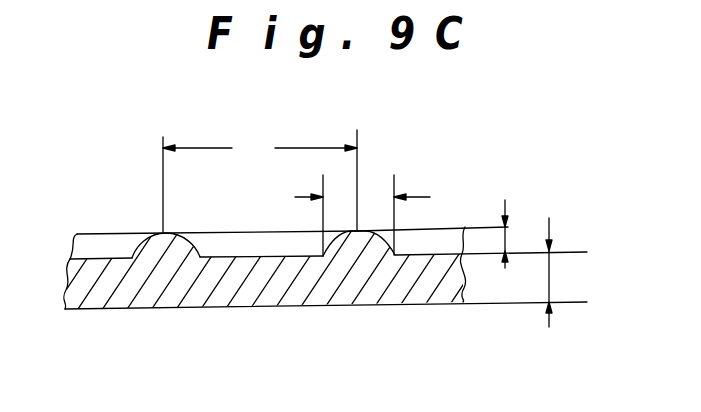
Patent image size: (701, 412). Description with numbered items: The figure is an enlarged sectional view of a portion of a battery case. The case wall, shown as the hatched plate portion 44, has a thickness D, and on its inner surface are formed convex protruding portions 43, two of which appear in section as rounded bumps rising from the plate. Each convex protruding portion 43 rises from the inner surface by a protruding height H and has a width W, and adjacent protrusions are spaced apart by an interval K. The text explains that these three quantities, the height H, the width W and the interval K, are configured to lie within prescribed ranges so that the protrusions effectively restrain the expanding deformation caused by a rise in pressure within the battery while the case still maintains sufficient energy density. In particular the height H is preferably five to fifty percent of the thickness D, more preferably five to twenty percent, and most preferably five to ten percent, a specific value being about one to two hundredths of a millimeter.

The convex protruding portion 43 is at (160, 243).
The plate portion of the battery case 44 is at (253, 294).
The interval of the protrusions K is at (260, 181).
The width of the protrusion W is at (371, 193).
The protruding height H is at (507, 239).
The thickness of the battery case D is at (550, 272).